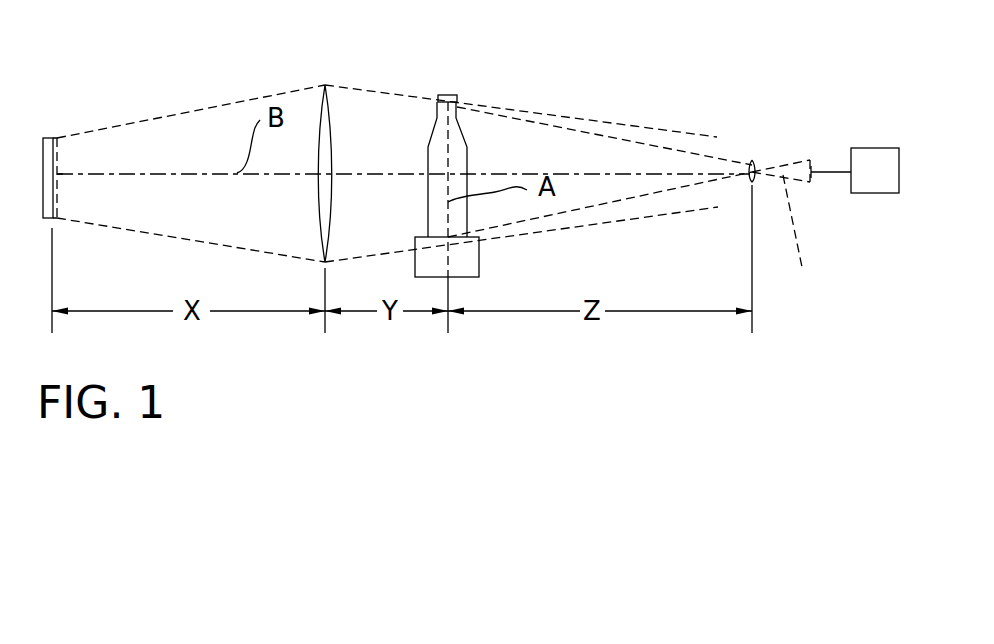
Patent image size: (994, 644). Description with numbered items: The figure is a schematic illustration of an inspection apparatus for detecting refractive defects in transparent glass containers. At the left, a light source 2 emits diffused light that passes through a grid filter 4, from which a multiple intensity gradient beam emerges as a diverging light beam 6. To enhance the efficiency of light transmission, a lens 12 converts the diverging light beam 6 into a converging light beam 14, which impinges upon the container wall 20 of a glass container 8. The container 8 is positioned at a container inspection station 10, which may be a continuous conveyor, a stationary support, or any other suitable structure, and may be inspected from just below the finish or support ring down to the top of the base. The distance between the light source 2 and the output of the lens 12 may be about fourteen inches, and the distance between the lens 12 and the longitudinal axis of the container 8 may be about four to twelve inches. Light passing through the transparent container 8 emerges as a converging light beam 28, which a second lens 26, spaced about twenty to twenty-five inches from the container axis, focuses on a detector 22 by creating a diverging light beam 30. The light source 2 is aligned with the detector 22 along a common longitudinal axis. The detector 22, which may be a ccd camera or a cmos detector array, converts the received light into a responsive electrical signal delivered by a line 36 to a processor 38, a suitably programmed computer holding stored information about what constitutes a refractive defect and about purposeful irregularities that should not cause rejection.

The light source 2 is at (45, 137).
The grid filter 4 is at (58, 167).
The diverging light beam 6 is at (193, 110).
The glass container 8 is at (464, 94).
The container inspection station 10 is at (479, 262).
The lens 12 is at (330, 115).
The converging light beam 14 is at (400, 92).
The container wall 20 is at (427, 203).
The detector 22 is at (813, 168).
The lens 26 is at (752, 157).
The converging light beam 28 is at (577, 133).
The diverging light beam 30 is at (812, 228).
The line 36 is at (833, 172).
The processor 38 is at (861, 184).